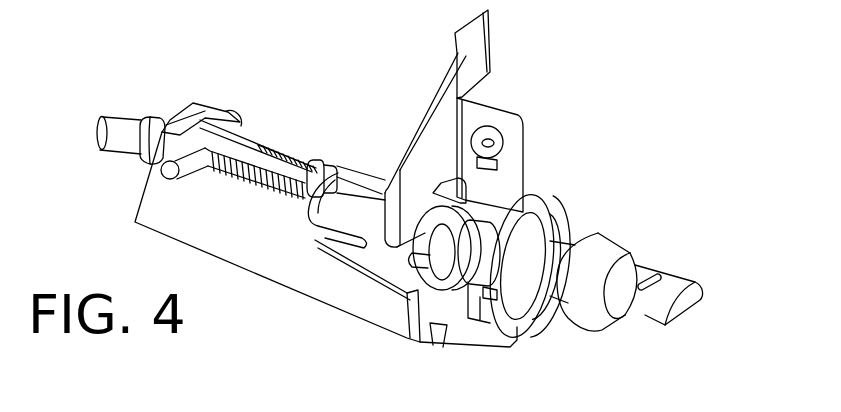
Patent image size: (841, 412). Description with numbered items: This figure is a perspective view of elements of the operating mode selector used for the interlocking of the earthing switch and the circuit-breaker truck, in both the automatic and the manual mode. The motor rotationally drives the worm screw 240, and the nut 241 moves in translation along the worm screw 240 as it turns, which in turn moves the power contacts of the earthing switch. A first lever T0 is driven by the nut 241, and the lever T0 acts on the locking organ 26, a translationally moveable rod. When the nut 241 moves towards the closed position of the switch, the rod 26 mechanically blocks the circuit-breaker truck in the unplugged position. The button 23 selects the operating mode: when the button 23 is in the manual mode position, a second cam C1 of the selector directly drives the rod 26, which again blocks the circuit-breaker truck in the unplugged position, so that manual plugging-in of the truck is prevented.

The nut 241 is at (197, 112).
The worm screw 240 is at (299, 146).
The locking organ 26 is at (483, 42).
The button 23 is at (673, 283).
The first lever T0 is at (300, 283).
The second cam C1 is at (407, 267).